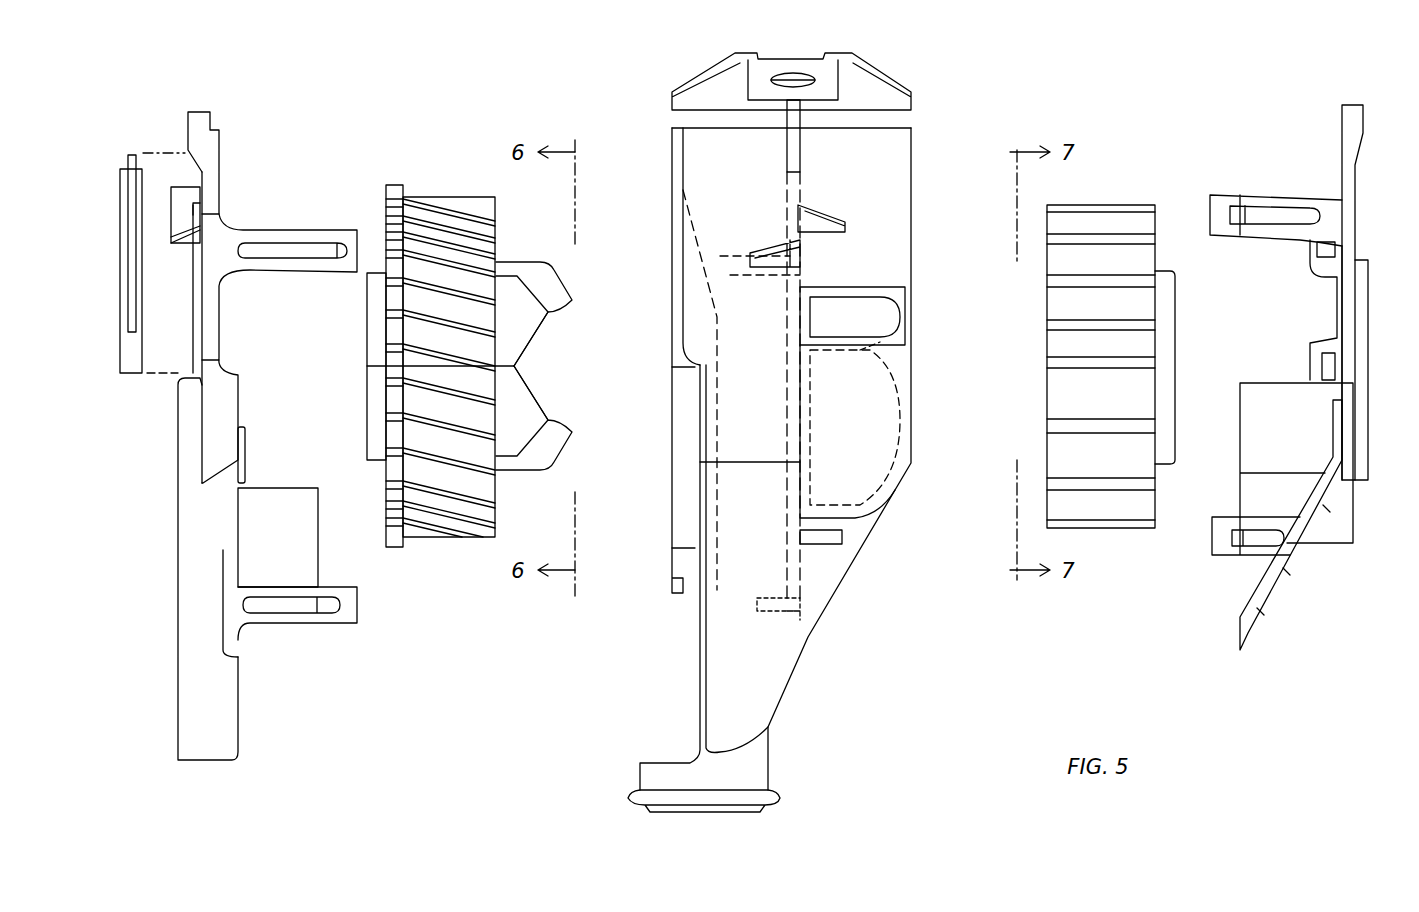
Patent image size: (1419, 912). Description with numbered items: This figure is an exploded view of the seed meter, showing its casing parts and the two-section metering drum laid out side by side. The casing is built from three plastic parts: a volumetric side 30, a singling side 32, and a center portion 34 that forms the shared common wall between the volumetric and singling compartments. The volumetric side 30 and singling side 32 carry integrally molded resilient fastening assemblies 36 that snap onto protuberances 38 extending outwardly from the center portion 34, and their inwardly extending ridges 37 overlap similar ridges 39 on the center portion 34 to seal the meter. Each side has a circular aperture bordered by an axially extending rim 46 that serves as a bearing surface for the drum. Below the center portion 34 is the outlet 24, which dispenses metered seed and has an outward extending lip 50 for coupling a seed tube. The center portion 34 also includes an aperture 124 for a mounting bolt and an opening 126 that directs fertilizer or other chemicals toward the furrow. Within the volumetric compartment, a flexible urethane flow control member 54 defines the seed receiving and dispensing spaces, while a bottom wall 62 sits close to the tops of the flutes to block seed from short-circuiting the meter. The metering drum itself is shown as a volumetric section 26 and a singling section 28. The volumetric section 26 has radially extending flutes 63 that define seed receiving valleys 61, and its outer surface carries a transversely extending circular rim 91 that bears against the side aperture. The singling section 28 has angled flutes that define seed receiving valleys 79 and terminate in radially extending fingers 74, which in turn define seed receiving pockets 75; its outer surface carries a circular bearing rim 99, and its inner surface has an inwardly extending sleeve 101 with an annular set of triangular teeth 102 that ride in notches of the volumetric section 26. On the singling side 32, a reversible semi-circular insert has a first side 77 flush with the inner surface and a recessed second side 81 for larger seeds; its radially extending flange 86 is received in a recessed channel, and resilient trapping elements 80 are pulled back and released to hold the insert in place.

The outlet 24 is at (785, 771).
The volumetric section 26 is at (1133, 180).
The singling section 28 is at (450, 176).
The volumetric side 30 is at (1381, 194).
The singling side 32 is at (186, 118).
The center portion 34 is at (889, 62).
The resilient fastening assemblies 36 is at (312, 272).
The inwardly extending ridges 37 is at (1337, 301).
The protuberances 38 is at (763, 251).
The ridges 39 is at (672, 200).
The axially extending rim 46 is at (198, 350).
The outward extending lip 50 is at (782, 804).
The flow control member 54 is at (900, 396).
The seed receiving valleys 61 is at (1094, 509).
The bottom wall 62 is at (1273, 493).
The radially extending flutes 63 is at (1064, 485).
The radially extending fingers 74 is at (398, 531).
The seed receiving pockets 75 is at (396, 434).
The first side 77 is at (190, 336).
The seed receiving valleys 79 is at (458, 480).
The resilient trapping elements 80 is at (178, 218).
The second side 81 is at (137, 373).
The radially extending flange 86 is at (126, 157).
The transversely extending circular rim 91 is at (1176, 268).
The transversely extending circular rim 99 is at (373, 272).
The inwardly extending sleeve 101 is at (516, 404).
The triangular teeth 102 is at (560, 300).
The aperture 124 is at (786, 82).
The opening 126 is at (875, 318).